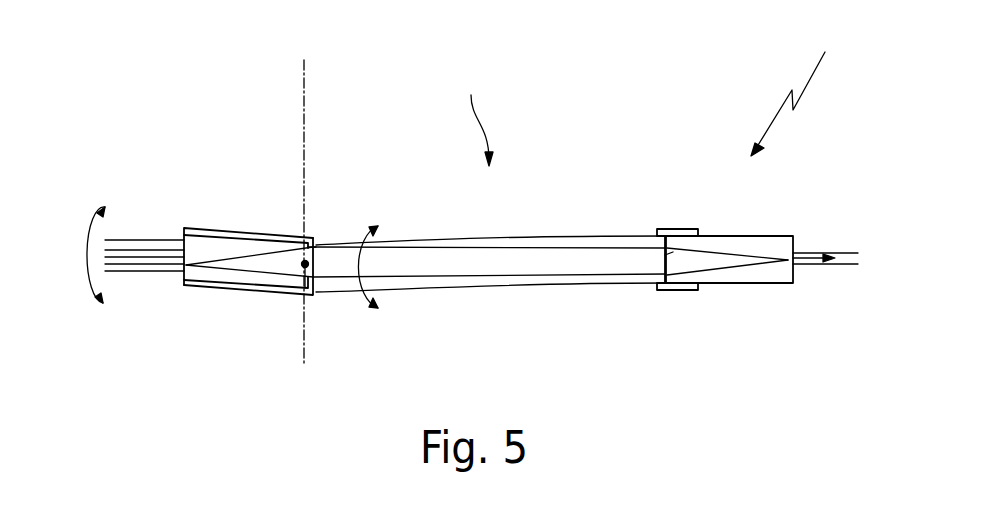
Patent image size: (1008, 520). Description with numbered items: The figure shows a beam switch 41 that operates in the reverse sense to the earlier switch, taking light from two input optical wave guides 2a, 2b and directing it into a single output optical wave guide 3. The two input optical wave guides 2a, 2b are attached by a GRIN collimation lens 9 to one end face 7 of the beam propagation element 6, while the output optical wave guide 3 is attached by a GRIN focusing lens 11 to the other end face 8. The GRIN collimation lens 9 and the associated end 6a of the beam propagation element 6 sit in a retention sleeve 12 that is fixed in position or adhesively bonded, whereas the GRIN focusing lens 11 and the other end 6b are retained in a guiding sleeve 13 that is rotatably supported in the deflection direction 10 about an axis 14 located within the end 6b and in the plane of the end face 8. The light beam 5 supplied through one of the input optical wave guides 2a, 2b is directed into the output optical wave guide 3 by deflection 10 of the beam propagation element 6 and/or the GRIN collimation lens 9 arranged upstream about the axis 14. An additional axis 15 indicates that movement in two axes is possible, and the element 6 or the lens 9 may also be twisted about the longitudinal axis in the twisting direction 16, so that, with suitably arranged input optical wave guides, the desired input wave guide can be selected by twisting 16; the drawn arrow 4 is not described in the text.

The input optical wave guide 2a is at (140, 250).
The input optical wave guide 2b is at (158, 271).
The output optical wave guide 3 is at (833, 250).
The plug connector 4 is at (478, 117).
The light beam 5 is at (132, 271).
The beam propagation element 6 is at (467, 284).
The end of the beam propagation element 6a is at (672, 252).
The end of the beam propagation element 6b is at (313, 253).
The end face 7 is at (303, 267).
The output end face 8 is at (668, 285).
The GRIN collimation lens 9 is at (230, 248).
The deflection direction 10 is at (94, 237).
The GRIN focusing lens 11 is at (750, 278).
The retention sleeve 12 is at (683, 229).
The guiding sleeve 13 is at (240, 288).
The axis 14 is at (308, 267).
The additional axis 15 is at (303, 100).
The twisting direction 16 is at (362, 223).
The beam switch 41 is at (798, 89).